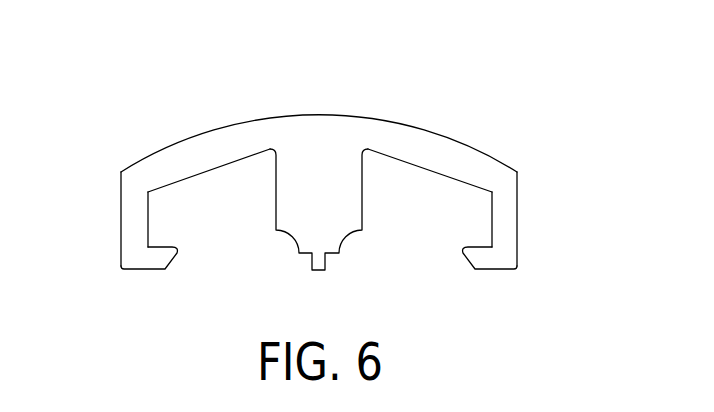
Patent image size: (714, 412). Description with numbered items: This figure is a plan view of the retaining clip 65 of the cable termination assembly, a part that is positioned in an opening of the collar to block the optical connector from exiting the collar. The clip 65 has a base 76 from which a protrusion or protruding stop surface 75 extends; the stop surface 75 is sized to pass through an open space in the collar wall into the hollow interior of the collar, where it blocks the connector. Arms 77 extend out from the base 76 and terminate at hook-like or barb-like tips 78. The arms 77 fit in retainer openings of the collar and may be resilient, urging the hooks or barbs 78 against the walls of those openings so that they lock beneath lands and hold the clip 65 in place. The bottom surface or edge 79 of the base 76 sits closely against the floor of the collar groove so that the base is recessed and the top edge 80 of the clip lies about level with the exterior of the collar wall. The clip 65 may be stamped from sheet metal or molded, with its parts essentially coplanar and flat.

The retaining clip 65 is at (329, 201).
The protruding stop surface 75 is at (290, 215).
The base 76 is at (319, 153).
The arms 77 is at (121, 220).
The hook-like or barb-like tips 78 is at (147, 262).
The bottom surface or edge 79 is at (165, 188).
The top edge 80 is at (230, 125).